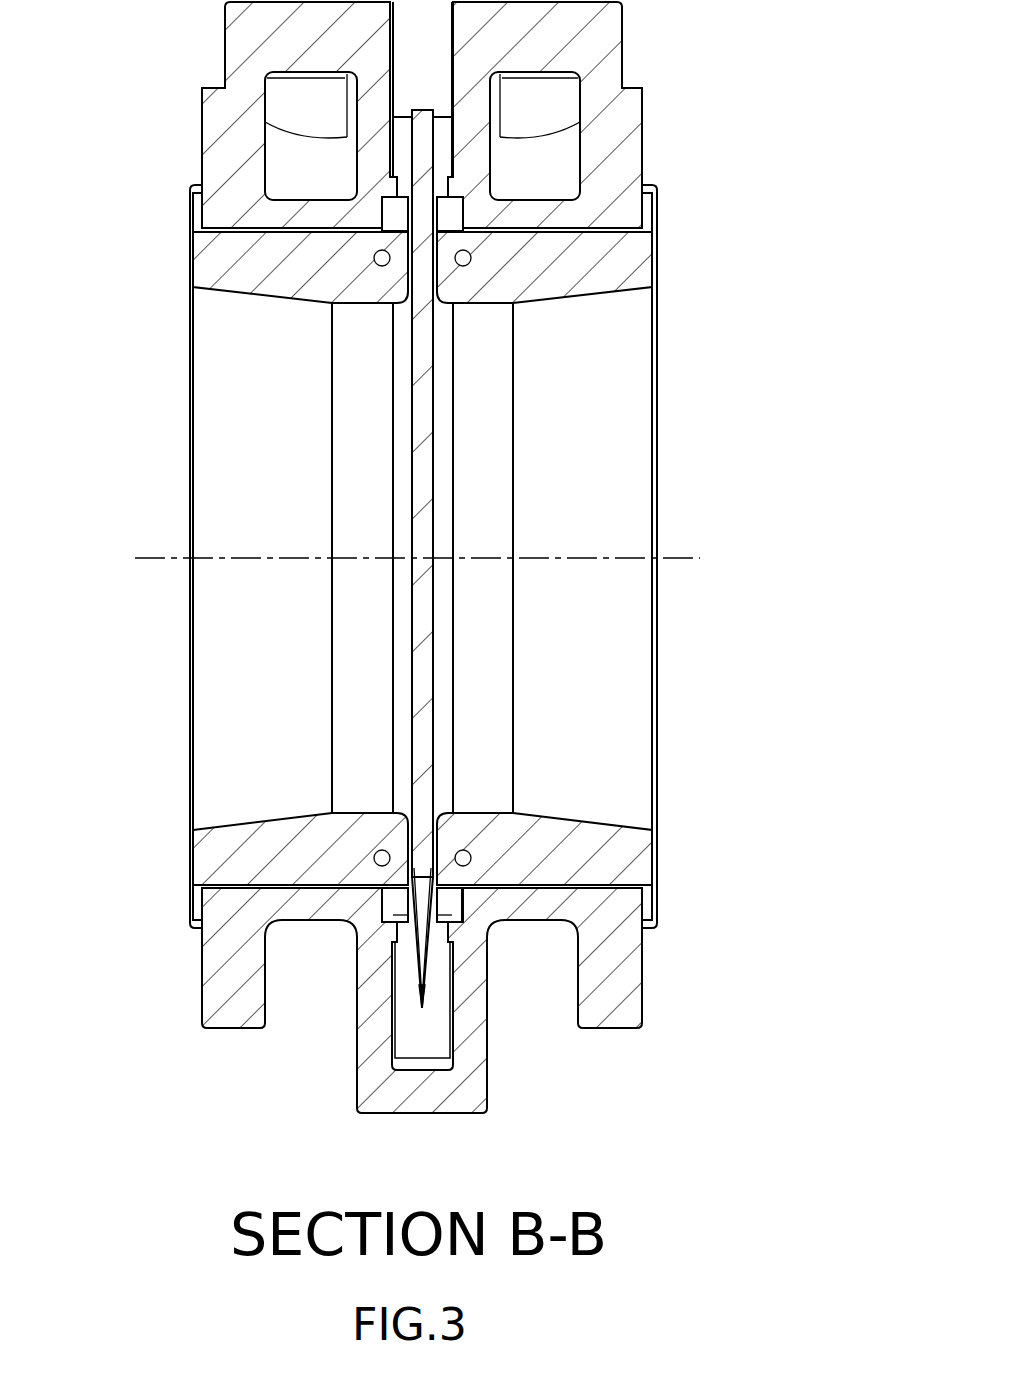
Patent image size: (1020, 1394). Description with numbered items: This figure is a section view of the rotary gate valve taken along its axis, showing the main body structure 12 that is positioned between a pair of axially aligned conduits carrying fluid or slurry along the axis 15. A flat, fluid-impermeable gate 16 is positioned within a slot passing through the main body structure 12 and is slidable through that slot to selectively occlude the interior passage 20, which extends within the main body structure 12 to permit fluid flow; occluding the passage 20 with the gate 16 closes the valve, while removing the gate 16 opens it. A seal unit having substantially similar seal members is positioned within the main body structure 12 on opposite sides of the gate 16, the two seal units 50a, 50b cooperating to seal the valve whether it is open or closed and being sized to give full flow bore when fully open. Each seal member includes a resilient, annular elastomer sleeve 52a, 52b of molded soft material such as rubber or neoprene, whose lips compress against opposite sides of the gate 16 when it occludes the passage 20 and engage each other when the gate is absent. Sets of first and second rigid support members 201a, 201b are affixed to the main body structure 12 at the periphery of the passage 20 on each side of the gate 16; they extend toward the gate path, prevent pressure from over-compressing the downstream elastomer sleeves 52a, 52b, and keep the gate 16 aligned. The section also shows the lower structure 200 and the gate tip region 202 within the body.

The main body structure 12 is at (615, 985).
The axis 15 is at (590, 558).
The gate 16 is at (423, 453).
The passage 20 is at (255, 482).
The seal unit 50a is at (190, 288).
The seal unit 50b is at (652, 263).
The elastomer sleeve 52a is at (248, 852).
The elastomer sleeve 52b is at (557, 845).
The bearing sleeve 200 is at (398, 933).
The first rigid support member 201a is at (390, 897).
The second rigid support member 201b is at (453, 898).
The shaft tip pin 202 is at (442, 913).